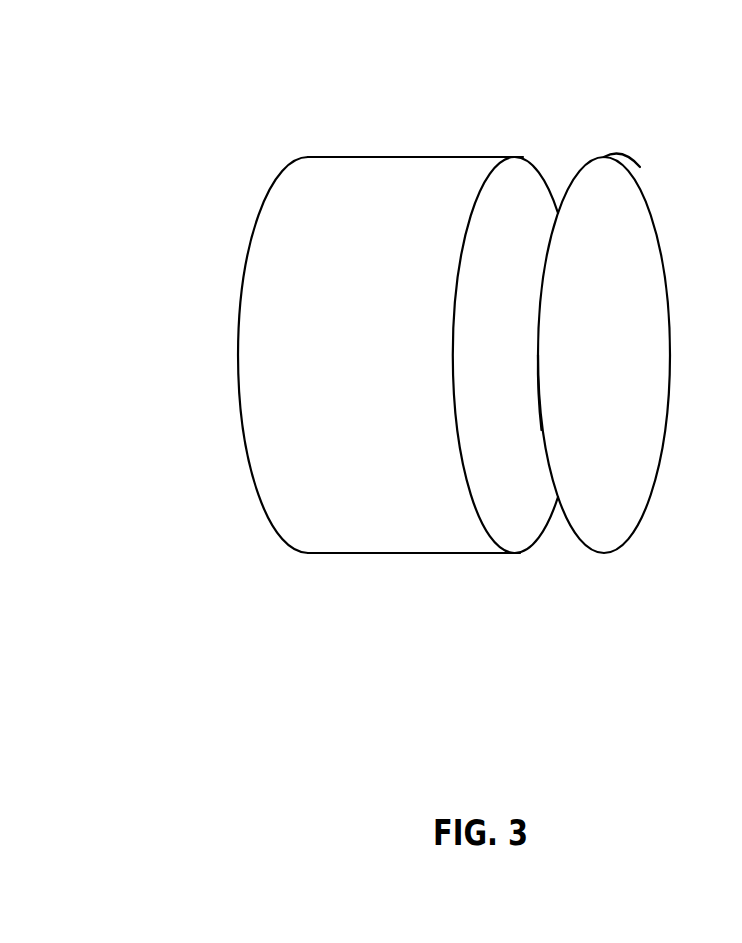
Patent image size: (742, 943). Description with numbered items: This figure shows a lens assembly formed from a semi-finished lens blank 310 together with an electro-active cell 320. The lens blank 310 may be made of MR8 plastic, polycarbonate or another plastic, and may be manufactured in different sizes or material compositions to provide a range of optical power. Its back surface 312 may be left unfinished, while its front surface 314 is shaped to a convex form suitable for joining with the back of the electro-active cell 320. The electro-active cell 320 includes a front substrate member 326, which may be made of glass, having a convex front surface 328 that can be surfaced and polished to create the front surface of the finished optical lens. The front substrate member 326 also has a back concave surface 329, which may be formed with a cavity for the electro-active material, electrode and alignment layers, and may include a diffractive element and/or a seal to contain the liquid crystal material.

The semi-finished lens blank 310 is at (405, 303).
The back surface 312 is at (222, 312).
The front surface 314 is at (524, 210).
The electro-active cell 320 is at (604, 590).
The front substrate member 326 is at (604, 355).
The convex front surface 328 is at (617, 211).
The back concave surface 329 is at (529, 450).